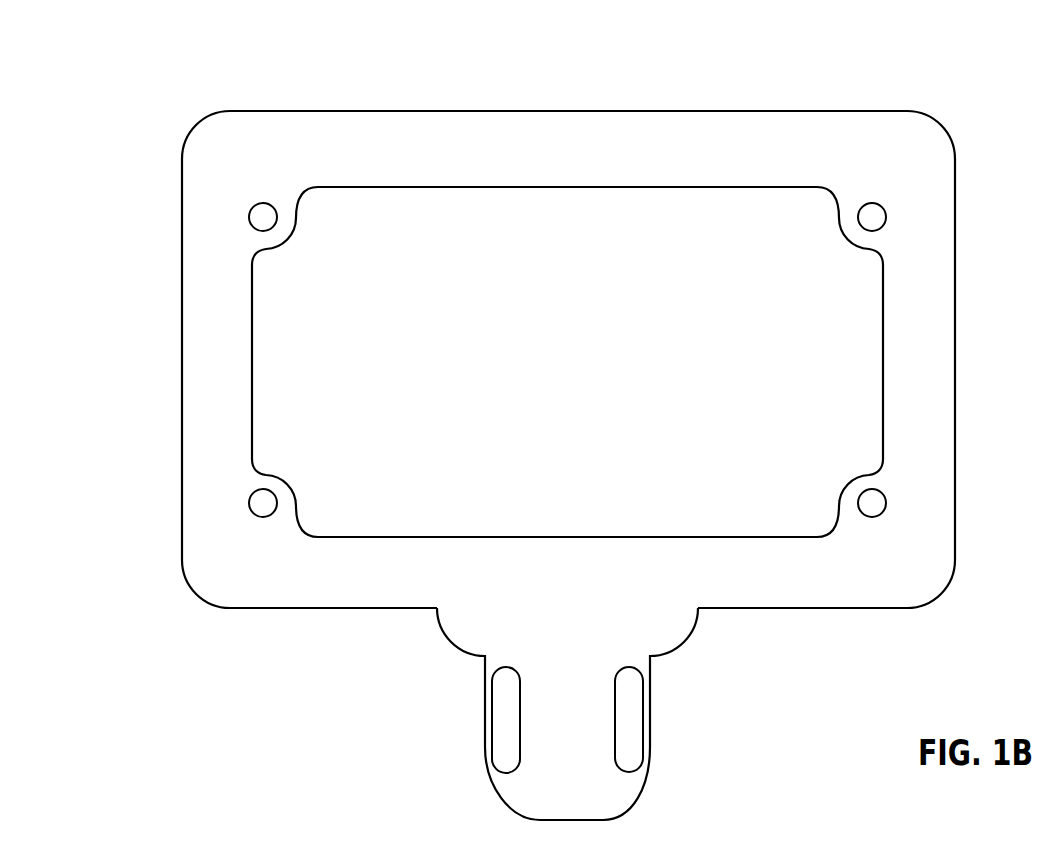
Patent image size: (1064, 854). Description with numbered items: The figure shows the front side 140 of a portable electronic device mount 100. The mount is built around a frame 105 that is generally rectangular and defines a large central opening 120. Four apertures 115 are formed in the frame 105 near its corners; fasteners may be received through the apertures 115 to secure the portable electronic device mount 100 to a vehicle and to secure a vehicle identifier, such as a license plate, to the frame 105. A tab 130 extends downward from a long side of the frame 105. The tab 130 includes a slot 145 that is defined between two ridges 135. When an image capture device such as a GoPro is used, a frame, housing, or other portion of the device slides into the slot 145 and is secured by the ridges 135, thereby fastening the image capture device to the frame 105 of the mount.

The portable electronic device mount 100 is at (575, 421).
The frame 105 is at (932, 116).
The apertures 115 is at (867, 231).
The opening 120 is at (378, 519).
The tab 130 is at (638, 798).
The ridges 135 is at (496, 725).
The front side 140 is at (816, 614).
The slot 145 is at (586, 689).